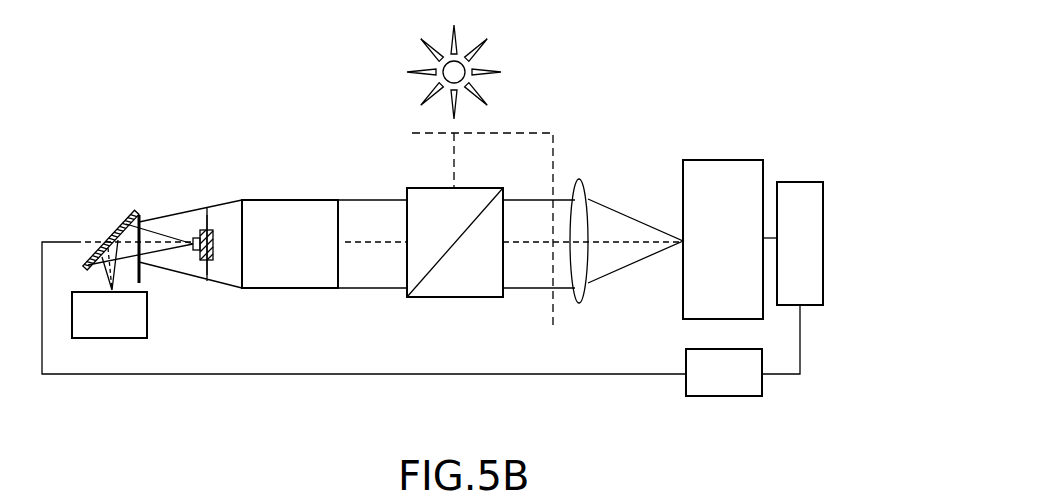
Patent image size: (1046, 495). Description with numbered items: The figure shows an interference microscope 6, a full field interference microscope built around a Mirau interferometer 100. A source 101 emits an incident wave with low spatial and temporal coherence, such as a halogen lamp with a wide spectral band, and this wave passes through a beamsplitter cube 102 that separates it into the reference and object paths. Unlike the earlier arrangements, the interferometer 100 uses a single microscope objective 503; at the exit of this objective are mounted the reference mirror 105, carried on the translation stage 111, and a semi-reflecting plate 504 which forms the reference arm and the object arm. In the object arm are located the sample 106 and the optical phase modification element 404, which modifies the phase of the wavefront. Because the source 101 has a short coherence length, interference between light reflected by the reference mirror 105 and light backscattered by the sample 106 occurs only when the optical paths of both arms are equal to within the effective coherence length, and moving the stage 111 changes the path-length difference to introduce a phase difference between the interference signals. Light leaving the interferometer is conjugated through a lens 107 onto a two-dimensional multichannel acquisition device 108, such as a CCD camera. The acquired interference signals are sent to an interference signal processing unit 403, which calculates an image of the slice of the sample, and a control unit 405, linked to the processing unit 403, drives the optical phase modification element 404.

The interference microscope 6 is at (217, 67).
The source 101 is at (500, 53).
The interferometer 100 is at (533, 133).
The beamsplitter cube 102 is at (475, 188).
The microscope objective 503 is at (291, 200).
The semi-reflecting plate 504 is at (147, 250).
The reference mirror 105 is at (190, 226).
The translation stage 111 is at (208, 217).
The optical phase modification element 404 is at (110, 230).
The sample 106 is at (147, 315).
The lens 107 is at (578, 180).
The two-dimensional multichannel acquisition device 108 is at (700, 160).
The interference signal processing unit 403 is at (797, 182).
The control unit 405 is at (717, 396).